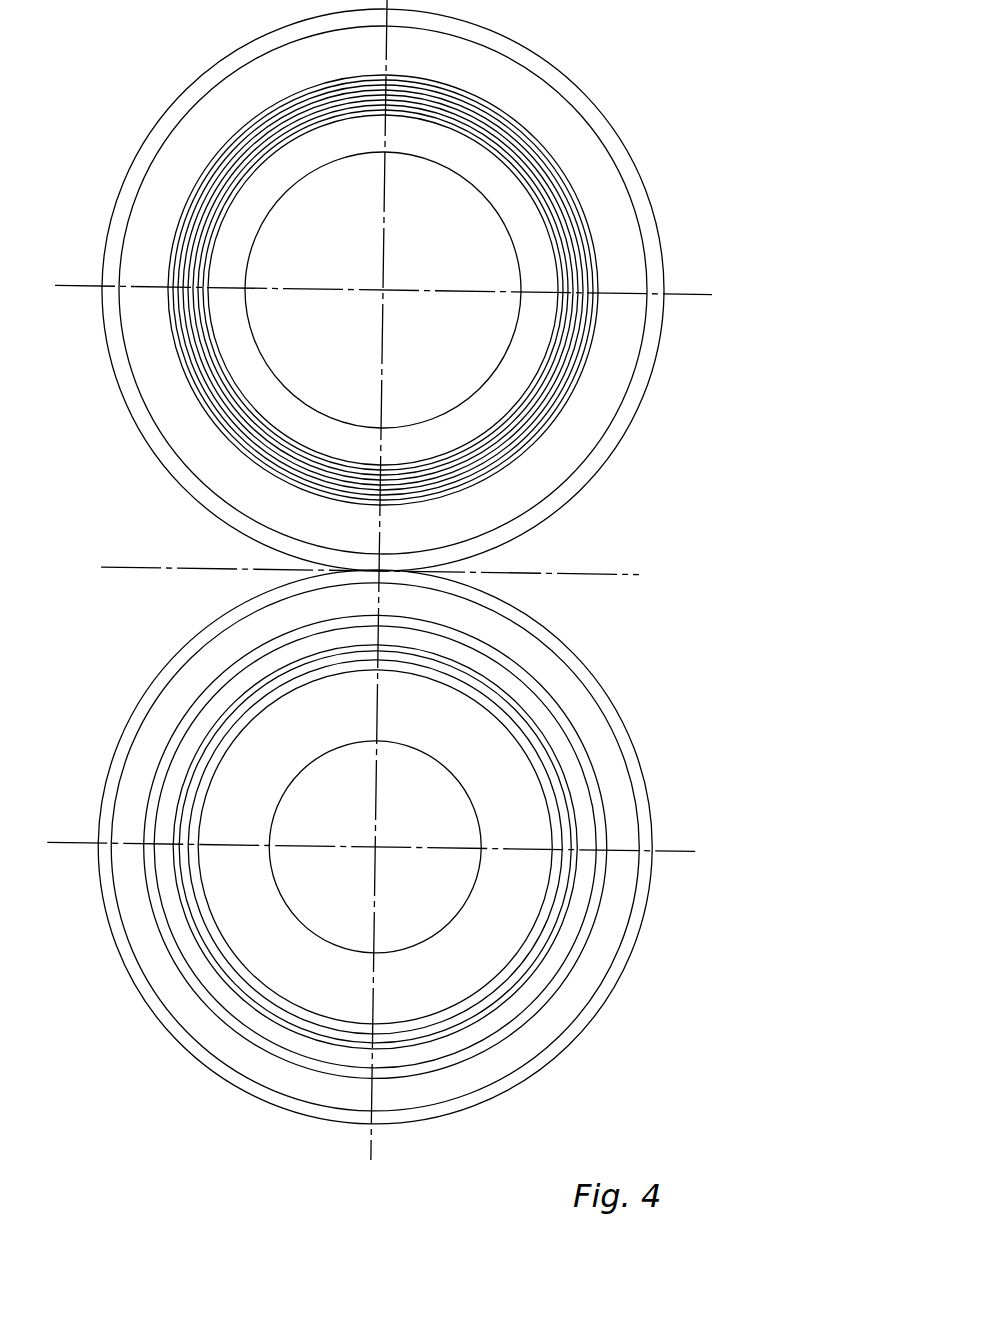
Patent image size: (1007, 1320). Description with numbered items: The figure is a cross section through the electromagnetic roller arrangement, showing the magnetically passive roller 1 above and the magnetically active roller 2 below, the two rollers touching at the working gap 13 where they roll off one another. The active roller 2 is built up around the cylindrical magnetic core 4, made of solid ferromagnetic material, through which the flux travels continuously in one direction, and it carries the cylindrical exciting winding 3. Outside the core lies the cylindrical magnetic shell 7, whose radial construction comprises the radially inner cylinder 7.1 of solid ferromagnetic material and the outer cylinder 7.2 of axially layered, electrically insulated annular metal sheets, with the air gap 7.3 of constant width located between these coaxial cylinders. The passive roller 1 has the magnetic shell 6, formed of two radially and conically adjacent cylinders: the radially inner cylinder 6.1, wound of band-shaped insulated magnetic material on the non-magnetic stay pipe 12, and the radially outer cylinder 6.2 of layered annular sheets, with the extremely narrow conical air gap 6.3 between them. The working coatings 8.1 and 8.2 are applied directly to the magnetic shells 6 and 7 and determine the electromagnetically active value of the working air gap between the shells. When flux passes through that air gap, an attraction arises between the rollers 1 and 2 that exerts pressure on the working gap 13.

The magnetically passive roller 1 is at (411, 314).
The magnetically active roller 2 is at (415, 867).
The cylindrical exciting winding 3 is at (500, 985).
The cylindrical magnetic core 4 is at (432, 982).
The magnetic shell 6 is at (449, 322).
The radially inner cylinder 6.1 is at (553, 385).
The radially outer cylinder 6.2 is at (608, 377).
The conical air gap 6.3 is at (532, 445).
The cylindrical magnetic shell 7 is at (446, 846).
The radially inner cylinder 7.1 is at (567, 760).
The outer cylinder 7.2 is at (618, 808).
The air gap 7.3 is at (595, 780).
The working coating 8.1 is at (650, 348).
The working coating 8.2 is at (648, 835).
The stay pipe 12 is at (502, 390).
The working gap 13 is at (385, 568).